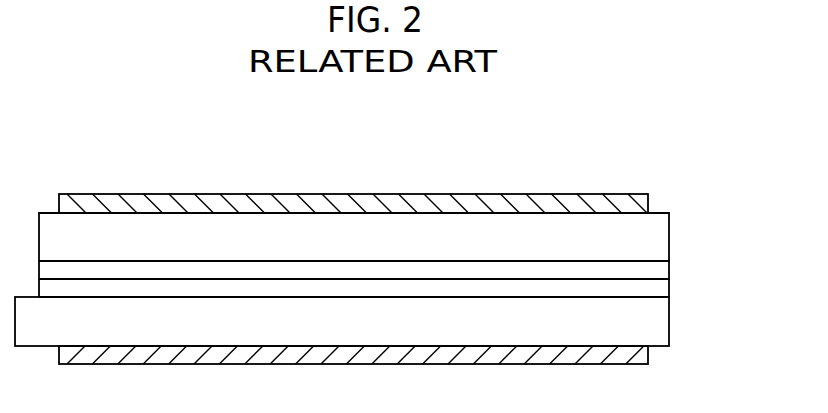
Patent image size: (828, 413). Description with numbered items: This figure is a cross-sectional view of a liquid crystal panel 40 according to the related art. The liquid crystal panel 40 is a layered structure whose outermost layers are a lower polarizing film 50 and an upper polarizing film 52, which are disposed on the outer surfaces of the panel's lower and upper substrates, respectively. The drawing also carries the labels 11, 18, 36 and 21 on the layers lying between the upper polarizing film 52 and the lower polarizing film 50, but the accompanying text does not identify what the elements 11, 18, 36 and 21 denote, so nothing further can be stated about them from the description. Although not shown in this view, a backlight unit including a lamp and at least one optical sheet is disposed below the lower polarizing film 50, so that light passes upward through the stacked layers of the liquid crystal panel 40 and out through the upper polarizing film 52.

The liquid crystal panel 40 is at (375, 227).
The upper polarizing film 52 is at (642, 205).
The substrate 11 is at (672, 213).
The thin film transistor layer 18 is at (659, 265).
The organic light emitting element layer 36 is at (659, 284).
The encapsulation substrate 21 is at (672, 279).
The lower polarizing film 50 is at (642, 355).